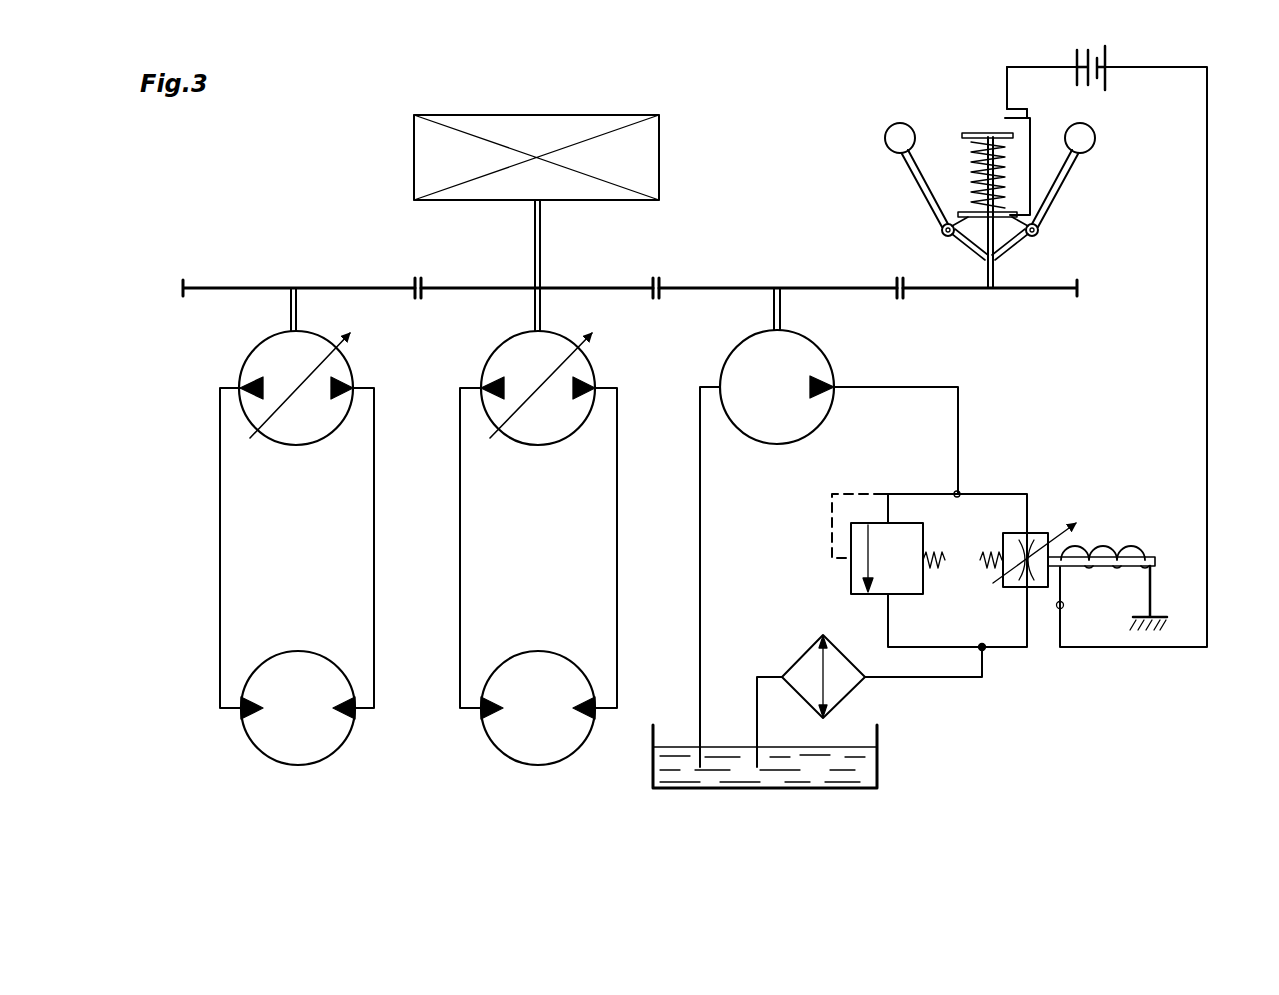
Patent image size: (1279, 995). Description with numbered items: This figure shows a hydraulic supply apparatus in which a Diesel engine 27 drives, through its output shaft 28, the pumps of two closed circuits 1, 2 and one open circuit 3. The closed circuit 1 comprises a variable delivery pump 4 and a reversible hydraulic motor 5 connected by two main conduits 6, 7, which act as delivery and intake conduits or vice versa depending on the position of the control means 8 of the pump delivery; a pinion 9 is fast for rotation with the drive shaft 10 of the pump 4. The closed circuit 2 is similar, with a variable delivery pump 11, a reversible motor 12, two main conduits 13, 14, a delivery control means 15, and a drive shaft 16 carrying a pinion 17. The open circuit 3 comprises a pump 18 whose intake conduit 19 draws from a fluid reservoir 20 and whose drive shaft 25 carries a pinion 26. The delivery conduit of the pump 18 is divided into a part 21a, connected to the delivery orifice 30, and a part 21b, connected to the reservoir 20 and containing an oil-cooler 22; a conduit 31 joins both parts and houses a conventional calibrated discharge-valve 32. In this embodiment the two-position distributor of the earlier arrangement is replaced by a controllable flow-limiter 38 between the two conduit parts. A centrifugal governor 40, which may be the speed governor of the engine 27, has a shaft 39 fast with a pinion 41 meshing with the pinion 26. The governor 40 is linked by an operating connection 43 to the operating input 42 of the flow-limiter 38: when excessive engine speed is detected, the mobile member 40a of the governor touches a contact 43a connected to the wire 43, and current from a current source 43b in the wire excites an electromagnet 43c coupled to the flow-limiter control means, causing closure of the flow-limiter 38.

The closed circuit 1 is at (297, 526).
The closed circuit 2 is at (538, 526).
The open circuit 3 is at (933, 549).
The variable delivery pump 4 is at (305, 437).
The reversible hydraulic motor 5 is at (300, 660).
The main conduit 6 is at (220, 585).
The main conduit 7 is at (374, 584).
The control means 8 is at (340, 340).
The pinion 9 is at (193, 288).
The drive shaft 10 is at (290, 316).
The variable delivery pump 11 is at (545, 437).
The reversible motor 12 is at (540, 660).
The main conduit 13 is at (460, 585).
The main conduit 14 is at (617, 584).
The delivery control means 15 is at (585, 340).
The drive shaft 16 is at (533, 316).
The pinion 17 is at (425, 288).
The pump 18 is at (803, 407).
The intake conduit 19 is at (700, 584).
The fluid reservoir 20 is at (880, 755).
The delivery conduit part 21a is at (960, 468).
The delivery conduit part 21b is at (984, 646).
The oil-cooler 22 is at (805, 642).
The drive shaft 25 is at (772, 316).
The pinion 26 is at (664, 288).
The Diesel engine 27 is at (532, 128).
The output shaft 28 is at (541, 254).
The delivery orifice 30 is at (838, 385).
The conduit 31 is at (916, 494).
The calibrated discharge-valve 32 is at (905, 595).
The flow-limiter 38 is at (1010, 552).
The shaft 39 is at (998, 272).
The centrifugal governor 40 is at (986, 172).
The mobile member 40a is at (1005, 118).
The pinion 41 is at (908, 288).
The operating input 42 is at (1064, 605).
The operating connection 43 is at (1209, 265).
The contact 43a is at (1020, 110).
The current source 43b is at (1107, 67).
The electromagnet 43c is at (1118, 550).